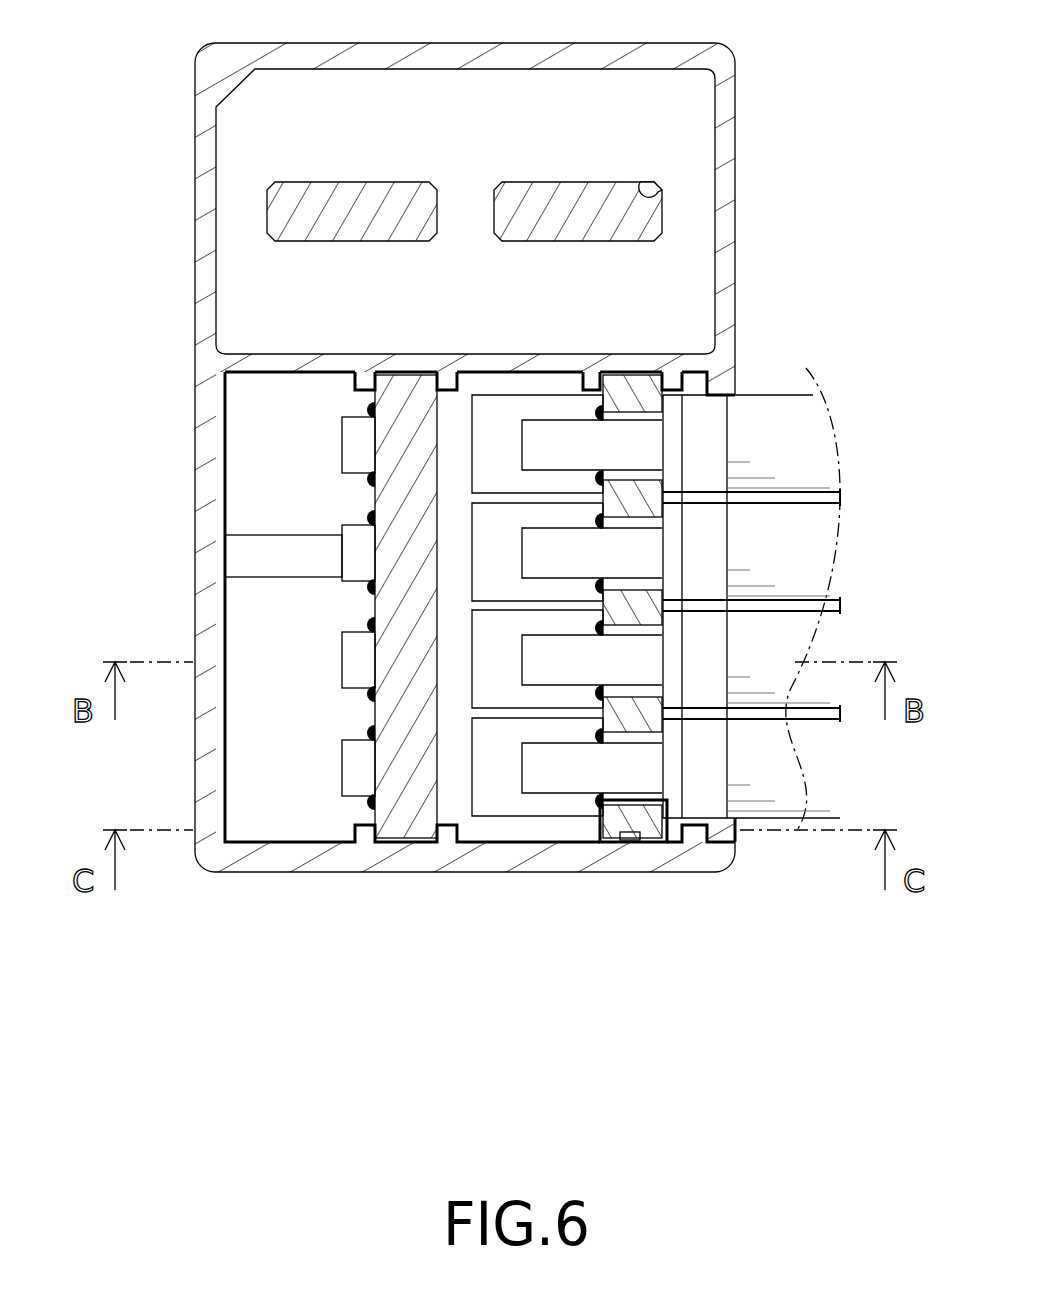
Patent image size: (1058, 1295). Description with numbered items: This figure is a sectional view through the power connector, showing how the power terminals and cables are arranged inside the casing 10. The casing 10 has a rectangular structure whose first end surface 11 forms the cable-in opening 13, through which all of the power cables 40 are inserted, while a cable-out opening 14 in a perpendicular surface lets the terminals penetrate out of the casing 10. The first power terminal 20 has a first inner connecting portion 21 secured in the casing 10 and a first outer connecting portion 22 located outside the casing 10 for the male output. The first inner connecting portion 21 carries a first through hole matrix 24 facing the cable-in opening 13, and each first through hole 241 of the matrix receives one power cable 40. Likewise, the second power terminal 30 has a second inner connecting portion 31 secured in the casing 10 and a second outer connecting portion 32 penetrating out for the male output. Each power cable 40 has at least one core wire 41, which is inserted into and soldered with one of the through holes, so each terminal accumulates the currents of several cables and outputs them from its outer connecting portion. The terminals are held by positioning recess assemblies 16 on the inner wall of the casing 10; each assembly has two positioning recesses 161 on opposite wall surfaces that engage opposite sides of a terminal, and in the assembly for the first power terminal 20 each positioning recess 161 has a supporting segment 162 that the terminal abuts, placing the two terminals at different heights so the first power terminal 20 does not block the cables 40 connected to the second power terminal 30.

The casing 10 is at (793, 53).
The first end surface 11 is at (737, 225).
The cable-in opening 13 is at (735, 400).
The cable-out opening 14 is at (663, 197).
The positioning recess assembly 16 is at (398, 345).
The positioning recess 161 is at (373, 392).
The supporting segment 162 is at (650, 372).
The first power terminal 20 is at (639, 853).
The first inner connecting portion 21 is at (652, 826).
The first outer connecting portion 22 is at (583, 190).
The first through hole matrix 24 is at (638, 852).
The first through hole 241 is at (612, 792).
The second power terminal 30 is at (404, 851).
The second inner connecting portion 31 is at (388, 773).
The second outer connecting portion 32 is at (310, 190).
The power cable 40 is at (768, 812).
The core wire 41 is at (530, 767).